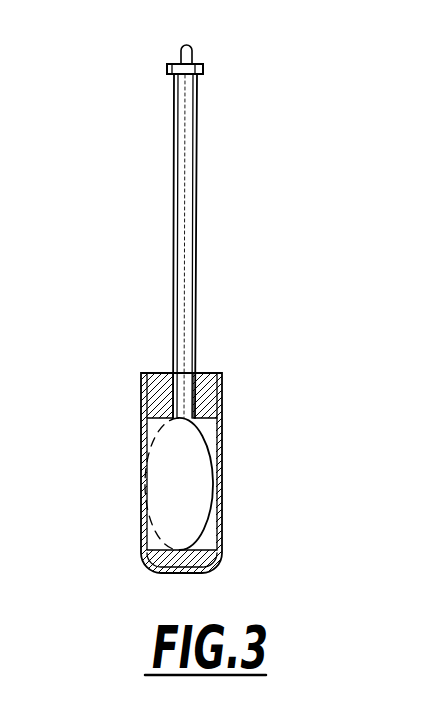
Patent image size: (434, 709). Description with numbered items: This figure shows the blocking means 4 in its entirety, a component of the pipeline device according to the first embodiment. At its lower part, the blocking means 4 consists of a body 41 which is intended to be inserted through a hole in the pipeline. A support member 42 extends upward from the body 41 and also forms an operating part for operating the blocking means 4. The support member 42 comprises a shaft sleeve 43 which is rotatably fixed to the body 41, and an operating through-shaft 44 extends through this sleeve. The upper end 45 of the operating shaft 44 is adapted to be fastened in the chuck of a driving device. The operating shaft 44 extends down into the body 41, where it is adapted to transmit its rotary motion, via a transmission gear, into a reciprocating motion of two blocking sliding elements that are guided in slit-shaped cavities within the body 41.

The blocking means 4 is at (115, 507).
The body 41 is at (141, 428).
The support member 42 is at (174, 243).
The shaft sleeve 43 is at (174, 170).
The operating through-shaft 44 is at (167, 63).
The upper end 45 is at (183, 46).